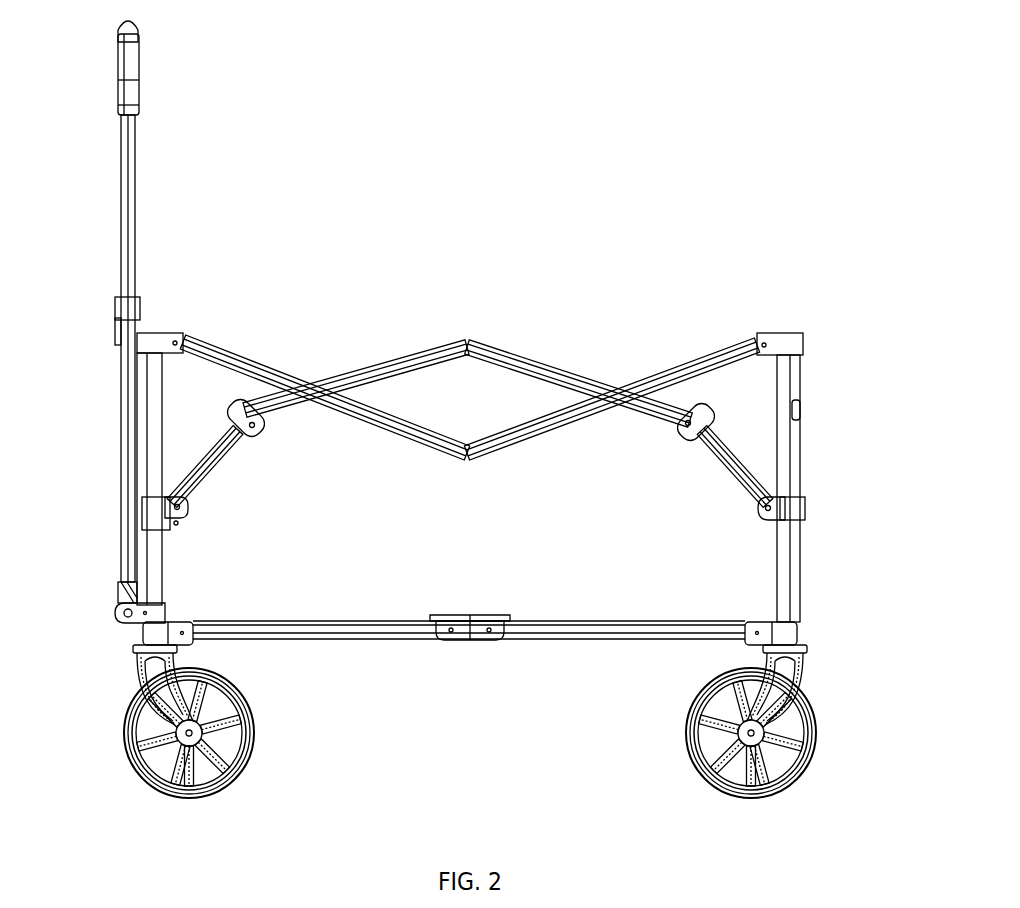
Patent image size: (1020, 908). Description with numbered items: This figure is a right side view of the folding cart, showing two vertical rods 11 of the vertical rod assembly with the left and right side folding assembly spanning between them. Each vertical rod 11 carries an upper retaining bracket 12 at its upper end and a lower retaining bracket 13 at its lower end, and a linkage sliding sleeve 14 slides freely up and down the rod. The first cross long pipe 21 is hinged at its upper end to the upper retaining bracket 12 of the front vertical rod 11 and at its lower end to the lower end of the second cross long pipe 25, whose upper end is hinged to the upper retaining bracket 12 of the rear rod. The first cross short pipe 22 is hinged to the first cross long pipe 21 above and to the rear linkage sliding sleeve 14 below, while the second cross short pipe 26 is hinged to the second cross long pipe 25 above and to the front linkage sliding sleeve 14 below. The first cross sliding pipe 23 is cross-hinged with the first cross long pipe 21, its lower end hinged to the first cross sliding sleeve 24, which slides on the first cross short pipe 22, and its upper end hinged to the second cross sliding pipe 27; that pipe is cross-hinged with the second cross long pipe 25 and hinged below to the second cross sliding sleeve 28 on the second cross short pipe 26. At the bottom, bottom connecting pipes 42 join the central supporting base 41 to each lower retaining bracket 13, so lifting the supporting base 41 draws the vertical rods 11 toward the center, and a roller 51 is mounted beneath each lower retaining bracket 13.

The vertical rod 11 is at (152, 468).
The upper retaining bracket 12 is at (152, 335).
The lower retaining bracket 13 is at (148, 616).
The linkage sliding sleeve 14 is at (150, 512).
The first cross long pipe 21 is at (290, 378).
The first cross short pipe 22 is at (215, 470).
The first cross sliding pipe 23 is at (425, 352).
The first cross sliding sleeve 24 is at (236, 410).
The second cross long pipe 25 is at (652, 372).
The second cross short pipe 26 is at (752, 467).
The second cross sliding pipe 27 is at (540, 367).
The second cross sliding sleeve 28 is at (718, 406).
The supporting base 41 is at (471, 637).
The bottom connecting pipe 42 is at (352, 632).
The roller 51 is at (148, 748).